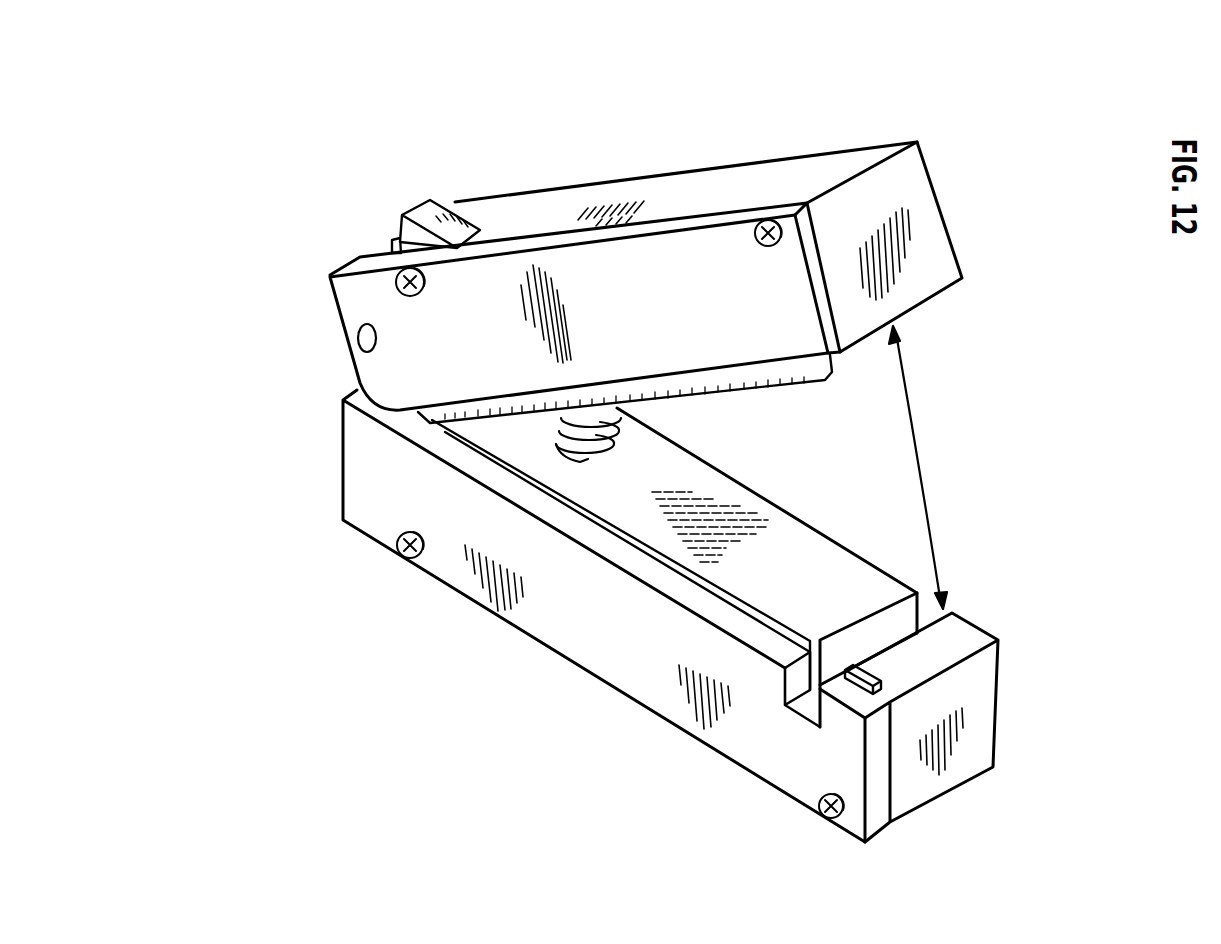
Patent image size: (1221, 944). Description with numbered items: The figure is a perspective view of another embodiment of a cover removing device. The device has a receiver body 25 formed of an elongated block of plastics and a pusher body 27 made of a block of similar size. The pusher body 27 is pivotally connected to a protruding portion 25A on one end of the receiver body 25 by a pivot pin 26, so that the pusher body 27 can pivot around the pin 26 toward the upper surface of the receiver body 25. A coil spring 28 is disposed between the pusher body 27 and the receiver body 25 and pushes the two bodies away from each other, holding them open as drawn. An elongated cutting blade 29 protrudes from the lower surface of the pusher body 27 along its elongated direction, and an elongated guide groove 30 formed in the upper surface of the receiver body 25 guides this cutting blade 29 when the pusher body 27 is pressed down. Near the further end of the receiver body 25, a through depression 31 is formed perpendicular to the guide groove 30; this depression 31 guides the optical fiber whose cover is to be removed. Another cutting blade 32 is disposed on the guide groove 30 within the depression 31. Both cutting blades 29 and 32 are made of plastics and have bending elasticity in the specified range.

The receiver body 25 is at (540, 618).
The protruding portion 25A is at (430, 200).
The pivot pin 26 is at (357, 350).
The pusher body 27 is at (662, 183).
The coil spring 28 is at (623, 447).
The cutting blade 29 is at (800, 383).
The guide groove 30 is at (730, 593).
The through depression 31 is at (790, 705).
The cutting blade 32 is at (832, 673).